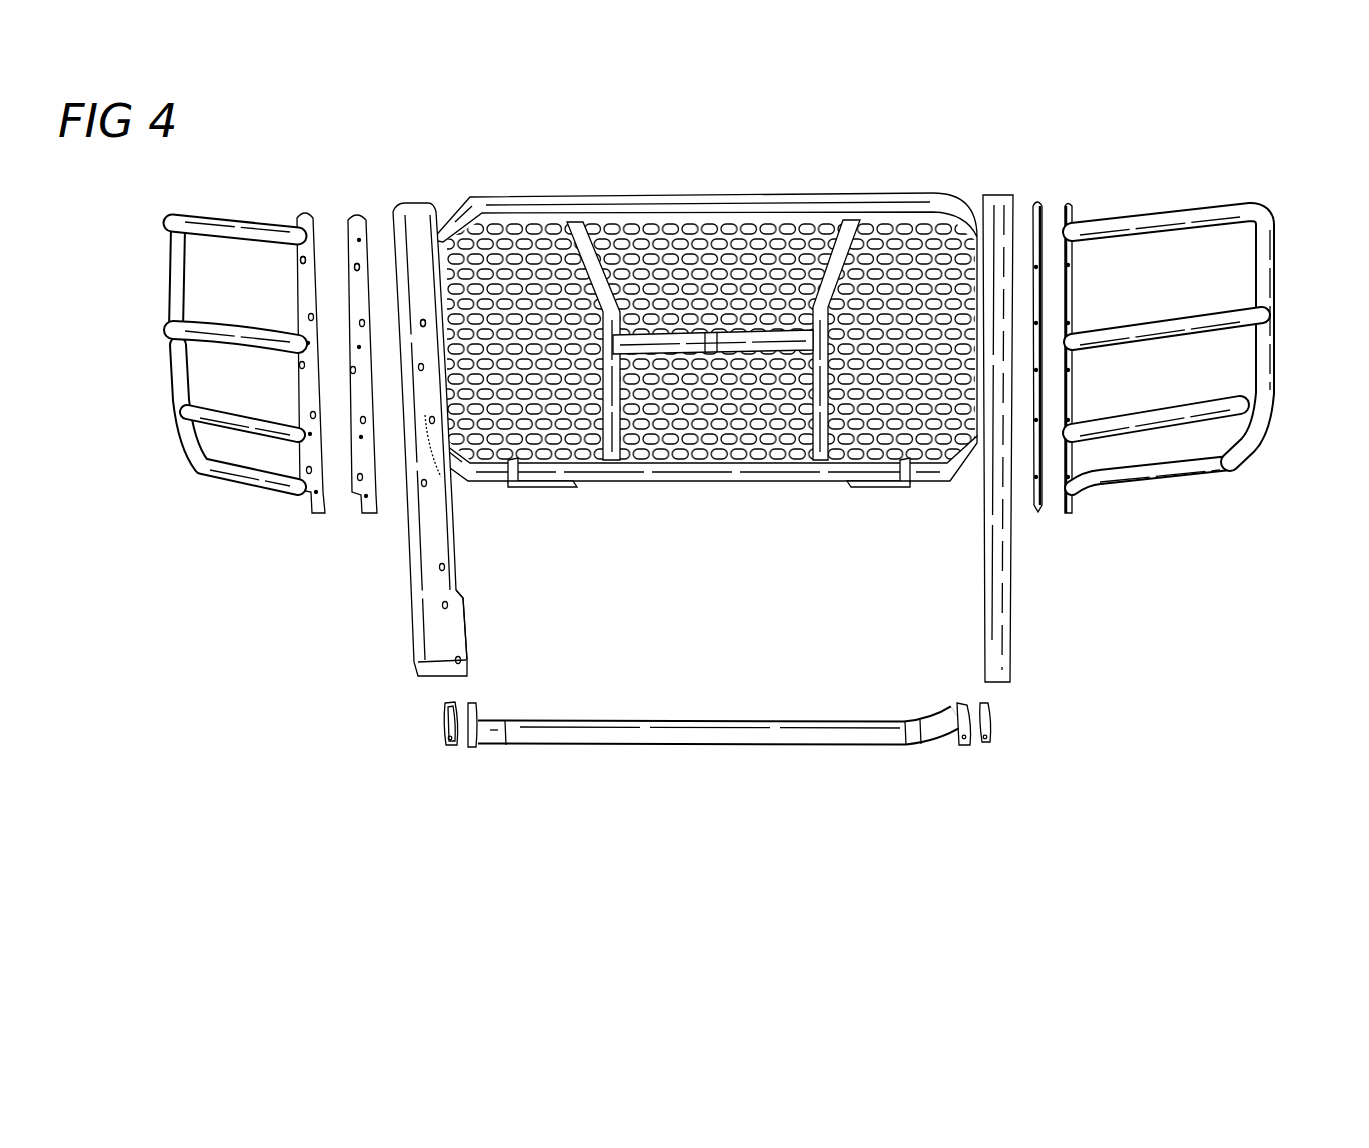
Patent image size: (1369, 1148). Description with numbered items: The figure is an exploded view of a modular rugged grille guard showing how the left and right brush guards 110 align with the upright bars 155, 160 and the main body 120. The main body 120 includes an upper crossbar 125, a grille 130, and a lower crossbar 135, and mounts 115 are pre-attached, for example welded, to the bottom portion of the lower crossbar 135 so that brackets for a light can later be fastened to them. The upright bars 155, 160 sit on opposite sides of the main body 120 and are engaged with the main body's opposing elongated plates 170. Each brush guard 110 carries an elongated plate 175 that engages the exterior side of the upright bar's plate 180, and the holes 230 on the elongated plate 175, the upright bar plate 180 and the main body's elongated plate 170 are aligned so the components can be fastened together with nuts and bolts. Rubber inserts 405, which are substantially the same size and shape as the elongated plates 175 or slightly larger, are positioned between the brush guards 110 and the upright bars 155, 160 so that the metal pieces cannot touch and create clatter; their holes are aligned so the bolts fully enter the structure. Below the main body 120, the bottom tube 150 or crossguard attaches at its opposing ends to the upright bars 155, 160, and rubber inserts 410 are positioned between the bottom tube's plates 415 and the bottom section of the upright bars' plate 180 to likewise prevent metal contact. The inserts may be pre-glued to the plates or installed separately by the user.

The brush guard 110 is at (176, 291).
The mount 115 is at (541, 489).
The main body 120 is at (697, 172).
The upper crossbar 125 is at (596, 197).
The grille 130 is at (745, 232).
The lower crossbar 135 is at (715, 483).
The bottom tube 150 is at (715, 747).
The upright bar 155 is at (416, 673).
The upright bar 160 is at (1014, 604).
The elongated plate 170 is at (432, 465).
The elongated plate 175 is at (305, 212).
The upright bar plate 180 is at (453, 628).
The holes 230 is at (422, 318).
The rubber insert 405 is at (364, 527).
The rubber insert 410 is at (992, 718).
The bottom tube plate 415 is at (473, 749).